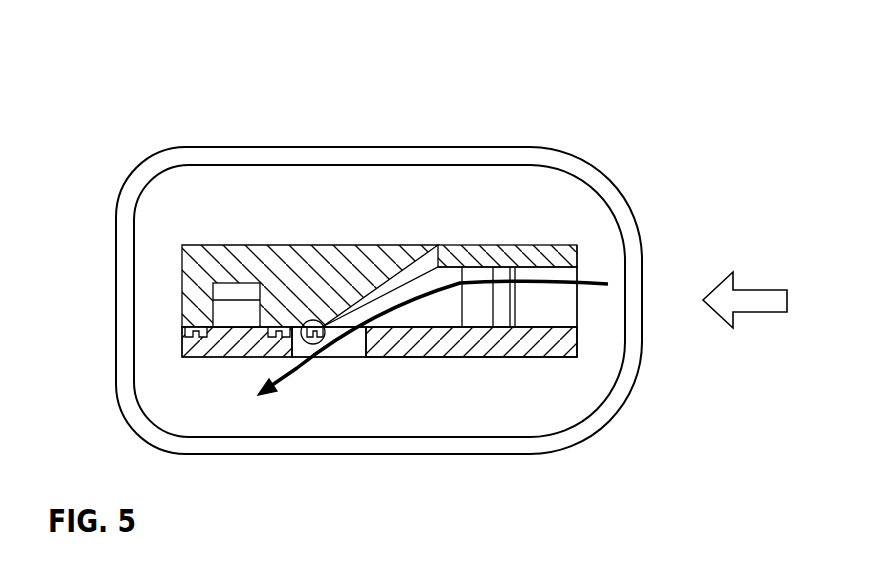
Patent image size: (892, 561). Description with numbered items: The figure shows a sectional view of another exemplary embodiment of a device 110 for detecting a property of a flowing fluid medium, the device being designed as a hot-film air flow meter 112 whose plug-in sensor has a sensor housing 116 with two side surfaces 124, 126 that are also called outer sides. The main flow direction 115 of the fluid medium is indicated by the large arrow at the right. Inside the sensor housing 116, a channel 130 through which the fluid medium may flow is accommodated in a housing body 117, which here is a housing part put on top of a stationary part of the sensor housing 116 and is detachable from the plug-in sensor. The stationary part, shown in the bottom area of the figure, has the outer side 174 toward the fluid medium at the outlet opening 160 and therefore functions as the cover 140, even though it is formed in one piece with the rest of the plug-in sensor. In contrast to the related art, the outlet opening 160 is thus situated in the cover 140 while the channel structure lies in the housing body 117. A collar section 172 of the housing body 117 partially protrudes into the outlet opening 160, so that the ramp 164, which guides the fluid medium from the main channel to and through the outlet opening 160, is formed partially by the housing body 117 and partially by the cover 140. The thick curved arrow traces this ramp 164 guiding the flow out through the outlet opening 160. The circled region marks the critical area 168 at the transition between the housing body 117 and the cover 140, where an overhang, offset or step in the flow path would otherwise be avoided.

The device 110 is at (379, 227).
The hot-film air flow meter 112 is at (379, 227).
The sensor housing 116 is at (153, 320).
The housing body 117 is at (185, 263).
The channel 130 is at (438, 267).
The cover 140 is at (547, 340).
The outlet opening 160 is at (338, 366).
The ramp 164 is at (392, 300).
The critical area 168 is at (314, 320).
The collar section 172 is at (321, 358).
The side surface 124 is at (476, 411).
The side surface 126 is at (476, 411).
The outer side 174 is at (476, 362).
The main flow direction 115 is at (758, 300).